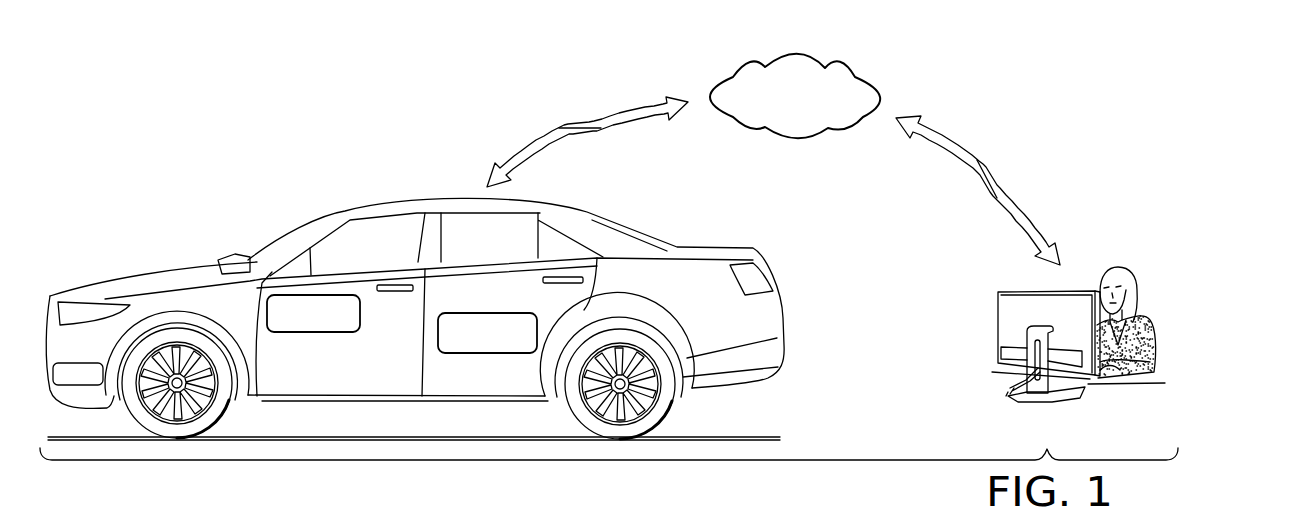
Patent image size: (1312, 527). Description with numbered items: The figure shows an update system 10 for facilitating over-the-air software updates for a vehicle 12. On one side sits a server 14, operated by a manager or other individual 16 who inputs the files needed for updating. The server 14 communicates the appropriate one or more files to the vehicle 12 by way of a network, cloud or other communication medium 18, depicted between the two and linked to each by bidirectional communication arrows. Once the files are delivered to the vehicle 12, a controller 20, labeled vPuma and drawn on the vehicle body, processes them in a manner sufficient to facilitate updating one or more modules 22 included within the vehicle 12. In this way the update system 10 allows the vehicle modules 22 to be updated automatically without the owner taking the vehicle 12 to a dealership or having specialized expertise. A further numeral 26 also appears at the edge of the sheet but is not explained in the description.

The update system 10 is at (1055, 80).
The vehicle 12 is at (640, 197).
The server 14 is at (978, 330).
The manager or other individual 16 is at (1160, 267).
The network, cloud or other communication medium 18 is at (883, 80).
The controller 20 is at (312, 294).
The modules 22 is at (488, 313).
The communication link 26 is at (444, 520).